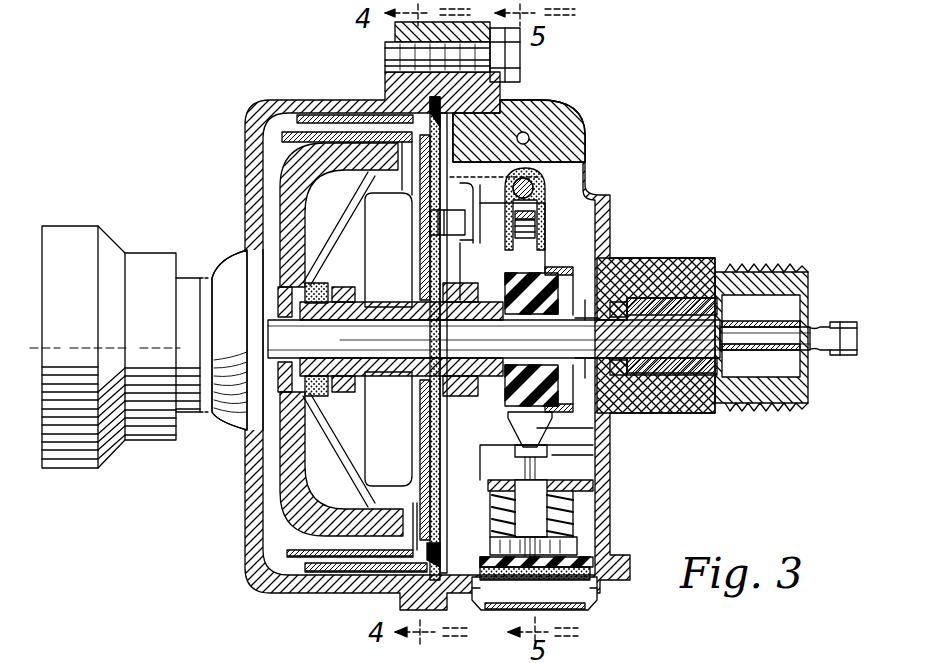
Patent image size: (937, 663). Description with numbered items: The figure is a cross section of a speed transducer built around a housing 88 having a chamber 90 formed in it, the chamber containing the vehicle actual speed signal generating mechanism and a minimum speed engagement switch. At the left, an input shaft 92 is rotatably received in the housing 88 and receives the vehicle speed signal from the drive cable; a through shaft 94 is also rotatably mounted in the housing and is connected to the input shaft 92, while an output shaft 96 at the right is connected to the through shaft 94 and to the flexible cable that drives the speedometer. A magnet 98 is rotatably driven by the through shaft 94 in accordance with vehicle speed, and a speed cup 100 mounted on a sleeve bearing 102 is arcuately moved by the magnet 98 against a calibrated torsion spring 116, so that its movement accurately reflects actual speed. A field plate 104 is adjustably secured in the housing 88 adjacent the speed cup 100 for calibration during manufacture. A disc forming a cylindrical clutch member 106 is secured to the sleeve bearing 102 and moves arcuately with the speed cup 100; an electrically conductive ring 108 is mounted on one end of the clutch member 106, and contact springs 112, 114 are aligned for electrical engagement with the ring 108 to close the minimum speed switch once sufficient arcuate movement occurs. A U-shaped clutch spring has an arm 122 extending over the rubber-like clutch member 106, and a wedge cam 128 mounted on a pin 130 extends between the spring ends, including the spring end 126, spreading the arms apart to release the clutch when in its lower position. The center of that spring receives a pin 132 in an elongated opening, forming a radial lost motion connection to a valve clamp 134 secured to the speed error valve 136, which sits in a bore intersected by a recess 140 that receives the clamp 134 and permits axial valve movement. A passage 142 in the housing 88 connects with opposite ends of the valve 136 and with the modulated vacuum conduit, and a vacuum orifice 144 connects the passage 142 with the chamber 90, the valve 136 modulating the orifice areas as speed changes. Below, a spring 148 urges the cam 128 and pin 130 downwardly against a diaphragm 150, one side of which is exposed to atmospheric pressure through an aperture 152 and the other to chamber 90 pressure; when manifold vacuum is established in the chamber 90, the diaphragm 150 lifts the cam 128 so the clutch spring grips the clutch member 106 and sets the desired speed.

The housing 88 is at (257, 128).
The chamber 90 is at (440, 200).
The input shaft 92 is at (40, 340).
The through shaft 94 is at (408, 358).
The output shaft 96 is at (832, 352).
The magnet 98 is at (285, 505).
The speed cup 100 is at (300, 578).
The sleeve bearing 102 is at (372, 300).
The field plate 104 is at (332, 118).
The clutch member 106 is at (548, 270).
The electrically conductive ring 108 is at (576, 270).
The contact spring 112 is at (598, 262).
The contact spring 114 is at (590, 398).
The torsion spring 116 is at (512, 416).
The arm 122 is at (520, 265).
The clutch spring end 126 is at (560, 450).
The cam 128 is at (578, 428).
The pin 130 is at (596, 472).
The pin 132 is at (538, 232).
The valve clamp 134 is at (538, 213).
The speed error valve 136 is at (535, 184).
The recess 140 is at (542, 176).
The passage 142 is at (525, 133).
The vacuum orifice 144 is at (517, 186).
The spring 148 is at (575, 510).
The diaphragm 150 is at (590, 552).
The aperture 152 is at (600, 594).